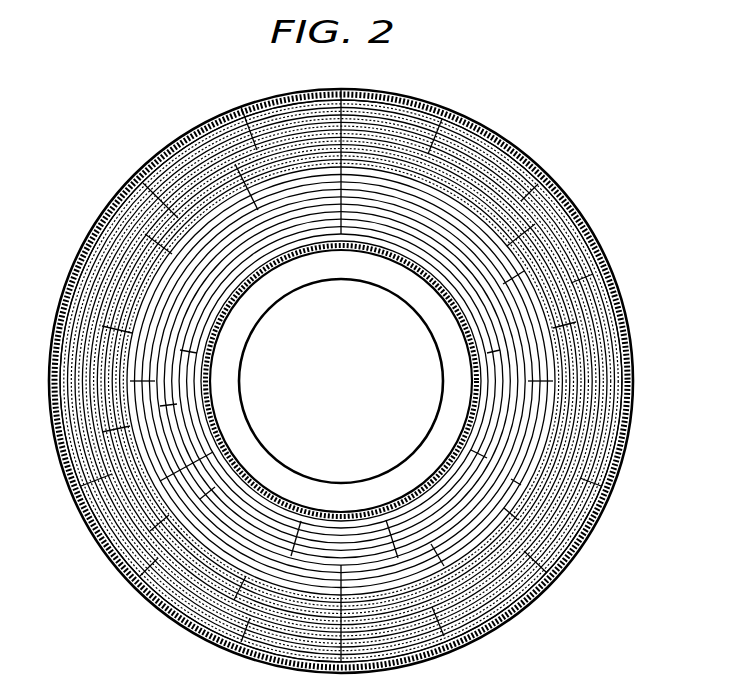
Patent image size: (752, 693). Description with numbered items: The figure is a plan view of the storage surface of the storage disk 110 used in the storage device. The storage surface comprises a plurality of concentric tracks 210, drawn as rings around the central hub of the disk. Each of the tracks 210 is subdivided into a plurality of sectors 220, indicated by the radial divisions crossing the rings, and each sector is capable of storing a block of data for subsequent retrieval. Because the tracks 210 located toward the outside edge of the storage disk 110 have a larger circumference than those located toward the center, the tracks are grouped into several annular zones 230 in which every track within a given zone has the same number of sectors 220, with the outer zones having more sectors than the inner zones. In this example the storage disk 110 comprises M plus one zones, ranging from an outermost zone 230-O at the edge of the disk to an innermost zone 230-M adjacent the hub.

The storage disk 110 is at (104, 155).
The concentric tracks 210 is at (517, 578).
The sectors 220 is at (455, 100).
The annular zones 230 is at (561, 415).
The outermost zone 230-O is at (241, 110).
The innermost zone 230-M is at (272, 238).